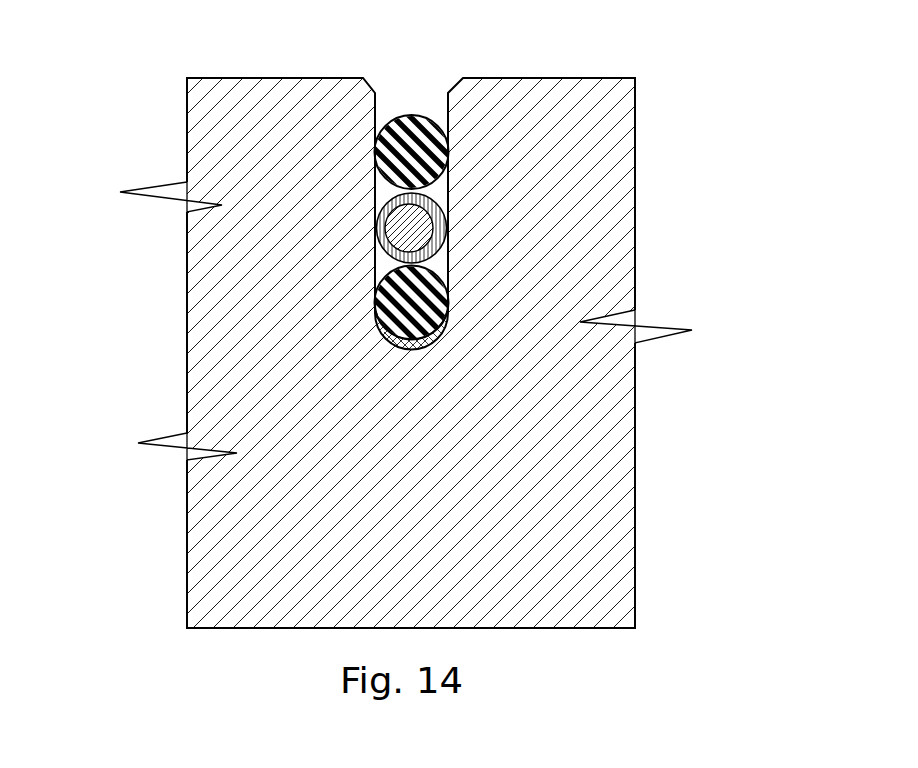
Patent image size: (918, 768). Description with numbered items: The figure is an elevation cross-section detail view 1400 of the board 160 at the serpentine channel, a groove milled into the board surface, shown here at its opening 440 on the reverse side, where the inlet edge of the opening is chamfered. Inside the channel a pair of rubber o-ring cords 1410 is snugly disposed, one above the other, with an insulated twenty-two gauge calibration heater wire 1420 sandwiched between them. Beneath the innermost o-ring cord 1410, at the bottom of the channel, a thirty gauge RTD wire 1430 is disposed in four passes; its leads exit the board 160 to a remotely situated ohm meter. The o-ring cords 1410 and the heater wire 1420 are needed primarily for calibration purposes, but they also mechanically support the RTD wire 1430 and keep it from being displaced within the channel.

The elevation cross-section detail view 1400 is at (118, 116).
The board 160 is at (186, 523).
The opening 440 is at (408, 100).
The rubber o-ring cords 1410 is at (462, 297).
The calibration heater wire 1420 is at (462, 233).
The RTD wire 1430 is at (461, 340).